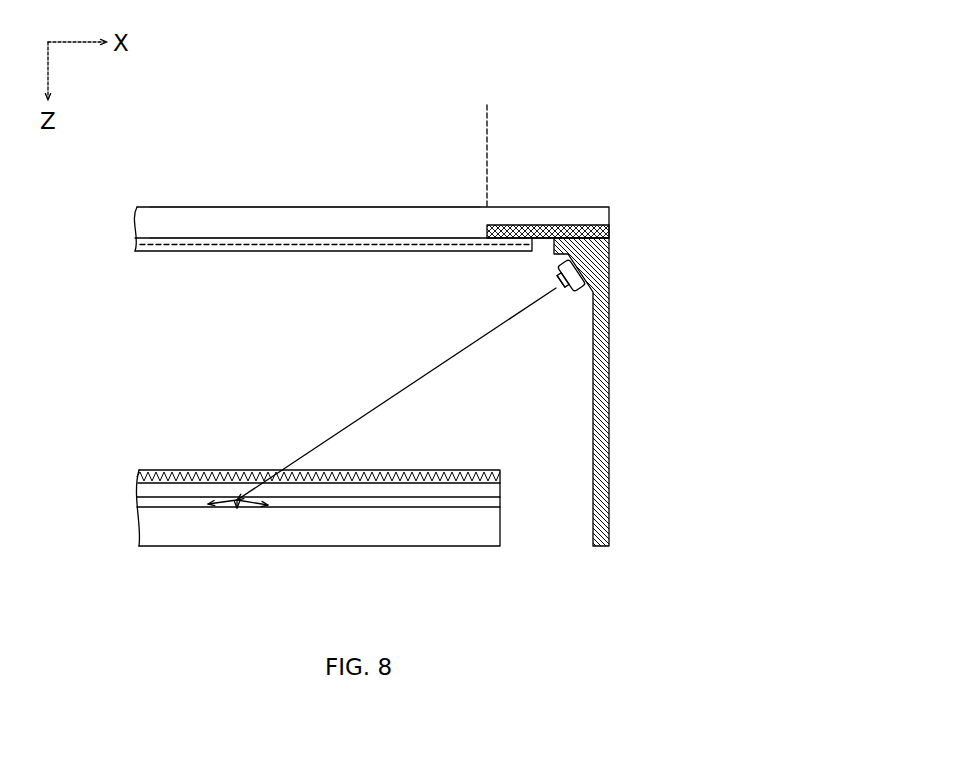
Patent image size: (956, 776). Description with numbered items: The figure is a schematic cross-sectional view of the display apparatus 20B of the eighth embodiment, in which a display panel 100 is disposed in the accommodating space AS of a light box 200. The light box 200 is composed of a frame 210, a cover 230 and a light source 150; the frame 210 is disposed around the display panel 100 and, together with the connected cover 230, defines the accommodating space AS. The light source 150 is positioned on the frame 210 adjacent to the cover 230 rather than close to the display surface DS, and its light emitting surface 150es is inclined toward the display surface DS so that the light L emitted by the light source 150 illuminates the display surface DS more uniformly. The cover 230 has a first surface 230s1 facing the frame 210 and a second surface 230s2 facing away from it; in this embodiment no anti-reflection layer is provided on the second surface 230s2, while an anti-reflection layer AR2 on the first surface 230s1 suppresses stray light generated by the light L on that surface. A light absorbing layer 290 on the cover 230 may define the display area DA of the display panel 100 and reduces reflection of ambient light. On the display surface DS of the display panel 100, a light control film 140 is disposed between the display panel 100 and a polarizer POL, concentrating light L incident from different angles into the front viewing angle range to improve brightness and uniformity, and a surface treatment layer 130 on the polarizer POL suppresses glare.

The light box 200 is at (590, 53).
The cover 230 is at (600, 215).
The second surface of the cover 230s2 is at (185, 205).
The first surface of the cover 230s1 is at (190, 242).
The light absorbing layer 290 is at (604, 232).
The anti-reflection layer AR2 is at (313, 249).
The frame 210 is at (598, 358).
The light source 150 is at (571, 294).
The light emitting surface 150es is at (555, 284).
The light L is at (480, 335).
The accommodating space AS is at (172, 373).
The display area DA is at (487, 120).
The surface treatment layer 130 is at (500, 472).
The polarizer POL is at (500, 490).
The light control film 140 is at (500, 502).
The display panel 100 is at (500, 532).
The display surface DS is at (161, 506).
The display apparatus 20B is at (700, 603).